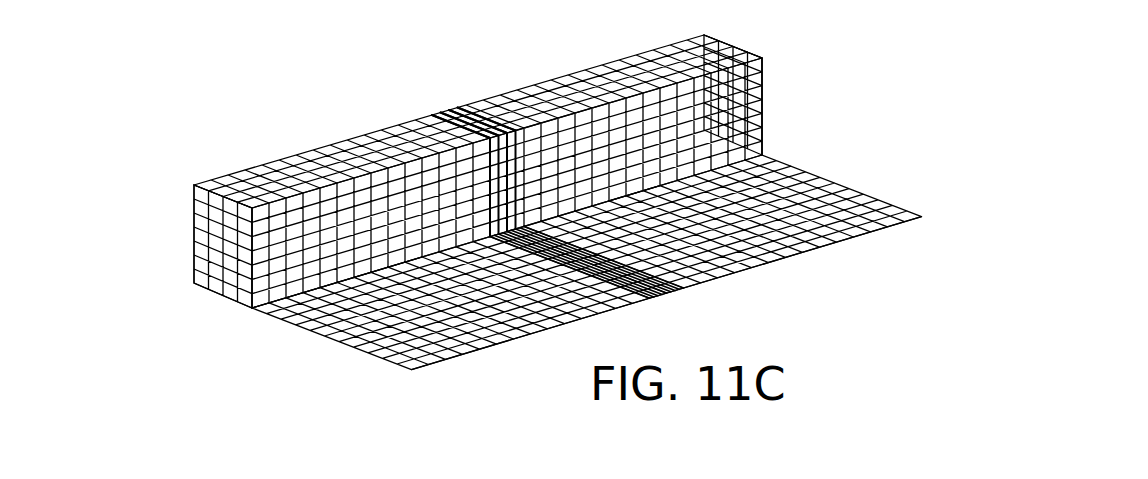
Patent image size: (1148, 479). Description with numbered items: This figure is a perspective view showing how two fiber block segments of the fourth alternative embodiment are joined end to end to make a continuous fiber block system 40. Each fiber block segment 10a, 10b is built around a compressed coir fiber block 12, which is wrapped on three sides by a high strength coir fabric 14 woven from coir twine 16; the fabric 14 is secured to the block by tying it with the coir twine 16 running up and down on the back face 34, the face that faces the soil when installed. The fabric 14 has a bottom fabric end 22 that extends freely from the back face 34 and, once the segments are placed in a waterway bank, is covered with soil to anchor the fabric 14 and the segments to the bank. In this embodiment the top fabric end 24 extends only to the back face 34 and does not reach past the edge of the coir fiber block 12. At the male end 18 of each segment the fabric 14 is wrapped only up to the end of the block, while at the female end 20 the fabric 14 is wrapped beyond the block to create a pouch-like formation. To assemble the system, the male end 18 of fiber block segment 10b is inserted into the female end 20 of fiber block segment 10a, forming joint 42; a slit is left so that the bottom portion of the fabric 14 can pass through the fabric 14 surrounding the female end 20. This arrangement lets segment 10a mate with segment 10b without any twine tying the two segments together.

The fiber block segment 10a is at (282, 146).
The fiber block segment 10b is at (598, 59).
The compressed coir fiber block 12 is at (217, 278).
The high strength coir fabric 14 is at (453, 292).
The coir twine 16 is at (370, 250).
The male end 18 is at (148, 273).
The female end 20 is at (537, 219).
The bottom fabric end 22 is at (470, 352).
The top fabric end 24 is at (737, 70).
The back face 34 is at (411, 226).
The fiber block system 40 is at (455, 80).
The joint 42 is at (454, 106).